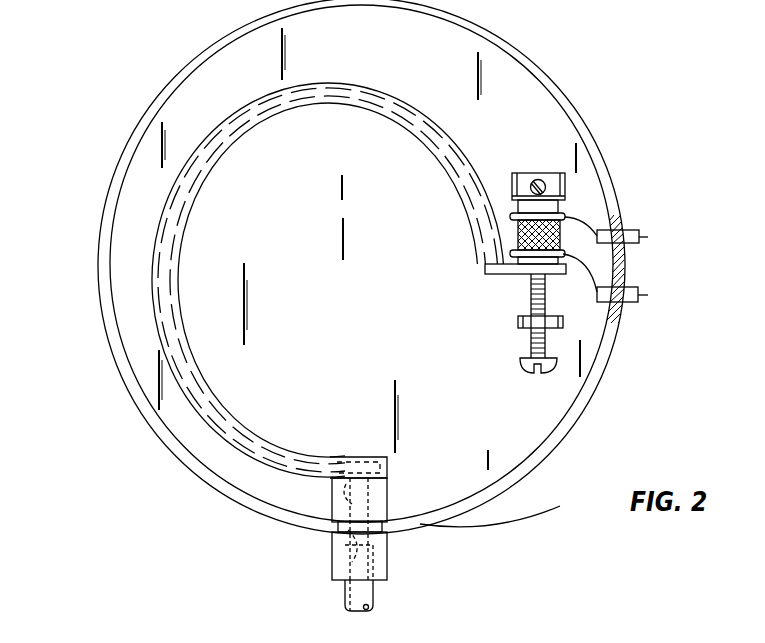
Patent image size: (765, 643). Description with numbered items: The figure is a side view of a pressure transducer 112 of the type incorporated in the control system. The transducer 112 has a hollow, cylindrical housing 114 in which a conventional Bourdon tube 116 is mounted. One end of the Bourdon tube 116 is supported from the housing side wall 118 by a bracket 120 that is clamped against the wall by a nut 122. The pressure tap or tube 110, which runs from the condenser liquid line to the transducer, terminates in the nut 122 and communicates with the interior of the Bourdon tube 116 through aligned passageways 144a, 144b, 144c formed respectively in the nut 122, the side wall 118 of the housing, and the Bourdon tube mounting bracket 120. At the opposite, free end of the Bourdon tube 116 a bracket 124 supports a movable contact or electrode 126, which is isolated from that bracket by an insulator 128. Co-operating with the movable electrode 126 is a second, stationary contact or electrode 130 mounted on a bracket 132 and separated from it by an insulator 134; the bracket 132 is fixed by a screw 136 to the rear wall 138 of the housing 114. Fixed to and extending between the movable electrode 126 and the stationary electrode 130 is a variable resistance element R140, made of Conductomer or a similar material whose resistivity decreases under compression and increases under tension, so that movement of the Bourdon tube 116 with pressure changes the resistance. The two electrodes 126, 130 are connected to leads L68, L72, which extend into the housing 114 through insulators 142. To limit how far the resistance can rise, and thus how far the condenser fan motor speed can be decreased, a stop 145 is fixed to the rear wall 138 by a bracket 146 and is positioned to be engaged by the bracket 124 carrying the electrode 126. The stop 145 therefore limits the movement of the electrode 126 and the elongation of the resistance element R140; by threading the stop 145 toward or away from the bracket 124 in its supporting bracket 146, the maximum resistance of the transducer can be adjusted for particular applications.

The pressure tap or tube 110 is at (345, 595).
The pressure transducer 112 is at (90, 101).
The housing 114 is at (180, 68).
The Bourdon tube 116 is at (205, 168).
The housing side wall 118 is at (490, 503).
The bracket 120 is at (388, 496).
The nut 122 is at (388, 559).
The bracket 124 is at (492, 274).
The movable contact or electrode 126 is at (510, 254).
The insulator 128 is at (553, 265).
The stationary contact or electrode 130 is at (517, 210).
The bracket 132 is at (523, 178).
The insulator 134 is at (565, 215).
The screw 136 is at (565, 183).
The rear wall 138 is at (560, 138).
The variable resistance element R140 is at (518, 228).
The insulators 142 is at (632, 231).
The passageway 144a is at (342, 557).
The passageway 144b is at (338, 525).
The passageway 144c is at (343, 496).
The stop 145 is at (533, 298).
The bracket 146 is at (527, 328).
The lead L72 is at (643, 240).
The lead L68 is at (648, 296).